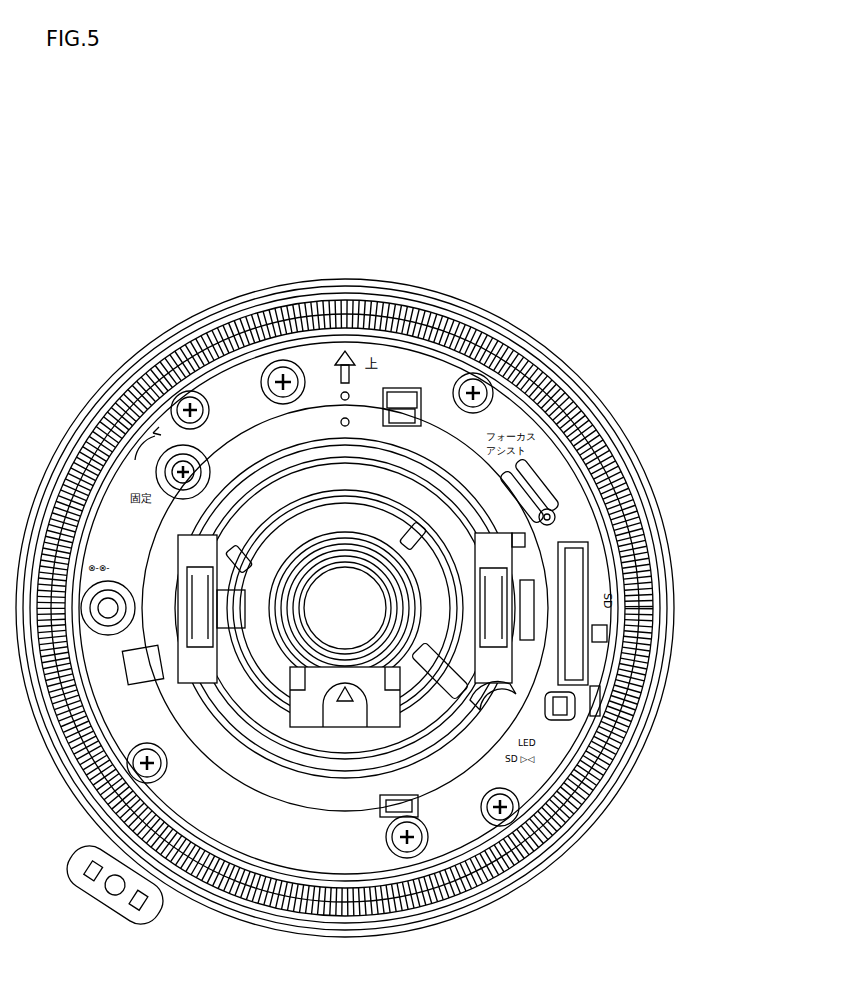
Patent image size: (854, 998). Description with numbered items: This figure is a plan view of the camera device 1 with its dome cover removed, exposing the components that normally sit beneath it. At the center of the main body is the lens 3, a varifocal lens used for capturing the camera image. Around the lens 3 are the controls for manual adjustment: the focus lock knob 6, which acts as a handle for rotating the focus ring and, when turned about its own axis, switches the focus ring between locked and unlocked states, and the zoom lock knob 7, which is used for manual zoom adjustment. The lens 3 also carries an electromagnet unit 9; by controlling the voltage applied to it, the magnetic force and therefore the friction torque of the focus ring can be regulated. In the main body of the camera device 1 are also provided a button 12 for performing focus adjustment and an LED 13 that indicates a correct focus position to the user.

The camera device 1 is at (541, 245).
The lens 3 is at (345, 605).
The focus lock knob 6 is at (462, 682).
The zoom lock knob 7 is at (490, 692).
The electromagnet unit 9 is at (305, 727).
The button 12 is at (555, 517).
The LED 13 is at (607, 632).